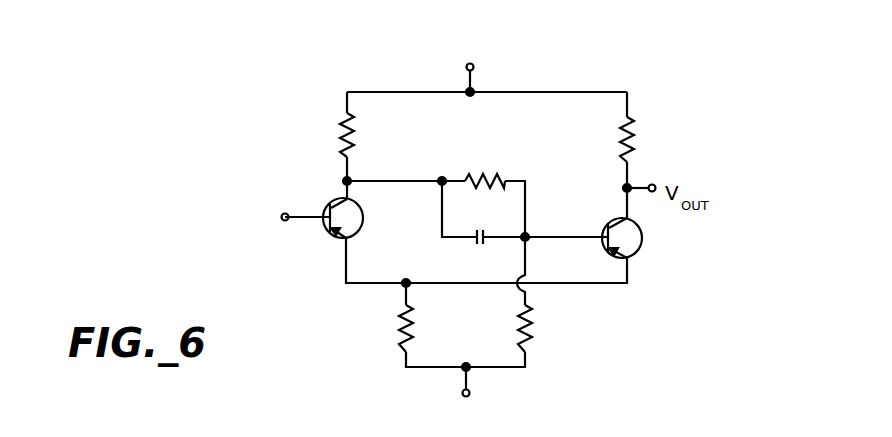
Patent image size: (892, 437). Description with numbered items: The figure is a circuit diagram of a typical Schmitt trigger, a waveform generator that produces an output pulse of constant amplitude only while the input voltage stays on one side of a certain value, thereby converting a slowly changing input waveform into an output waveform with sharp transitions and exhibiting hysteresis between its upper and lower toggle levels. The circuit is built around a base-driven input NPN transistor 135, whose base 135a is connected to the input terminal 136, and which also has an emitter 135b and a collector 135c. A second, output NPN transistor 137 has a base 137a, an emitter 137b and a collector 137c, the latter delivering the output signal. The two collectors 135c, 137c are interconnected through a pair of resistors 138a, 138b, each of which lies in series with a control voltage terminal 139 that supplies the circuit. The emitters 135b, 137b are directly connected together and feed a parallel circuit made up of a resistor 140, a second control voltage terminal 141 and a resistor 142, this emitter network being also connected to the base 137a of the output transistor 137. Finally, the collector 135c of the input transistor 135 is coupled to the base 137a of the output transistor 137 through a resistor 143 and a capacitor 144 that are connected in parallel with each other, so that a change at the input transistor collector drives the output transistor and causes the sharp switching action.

The input NPN transistor 135 is at (333, 222).
The base 135a is at (306, 213).
The emitter 135b is at (352, 230).
The collector 135c is at (364, 216).
The input terminal 136 is at (281, 214).
The output NPN transistor 137 is at (631, 226).
The base 137a is at (604, 230).
The emitter 137b is at (607, 252).
The collector 137c is at (618, 222).
The resistor 138a is at (356, 146).
The resistor 138b is at (619, 147).
The control voltage terminal 139 is at (467, 63).
The resistor 140 is at (462, 392).
The control voltage terminal 141 is at (398, 322).
The resistor 142 is at (536, 320).
The resistor 143 is at (478, 172).
The capacitor 144 is at (476, 244).